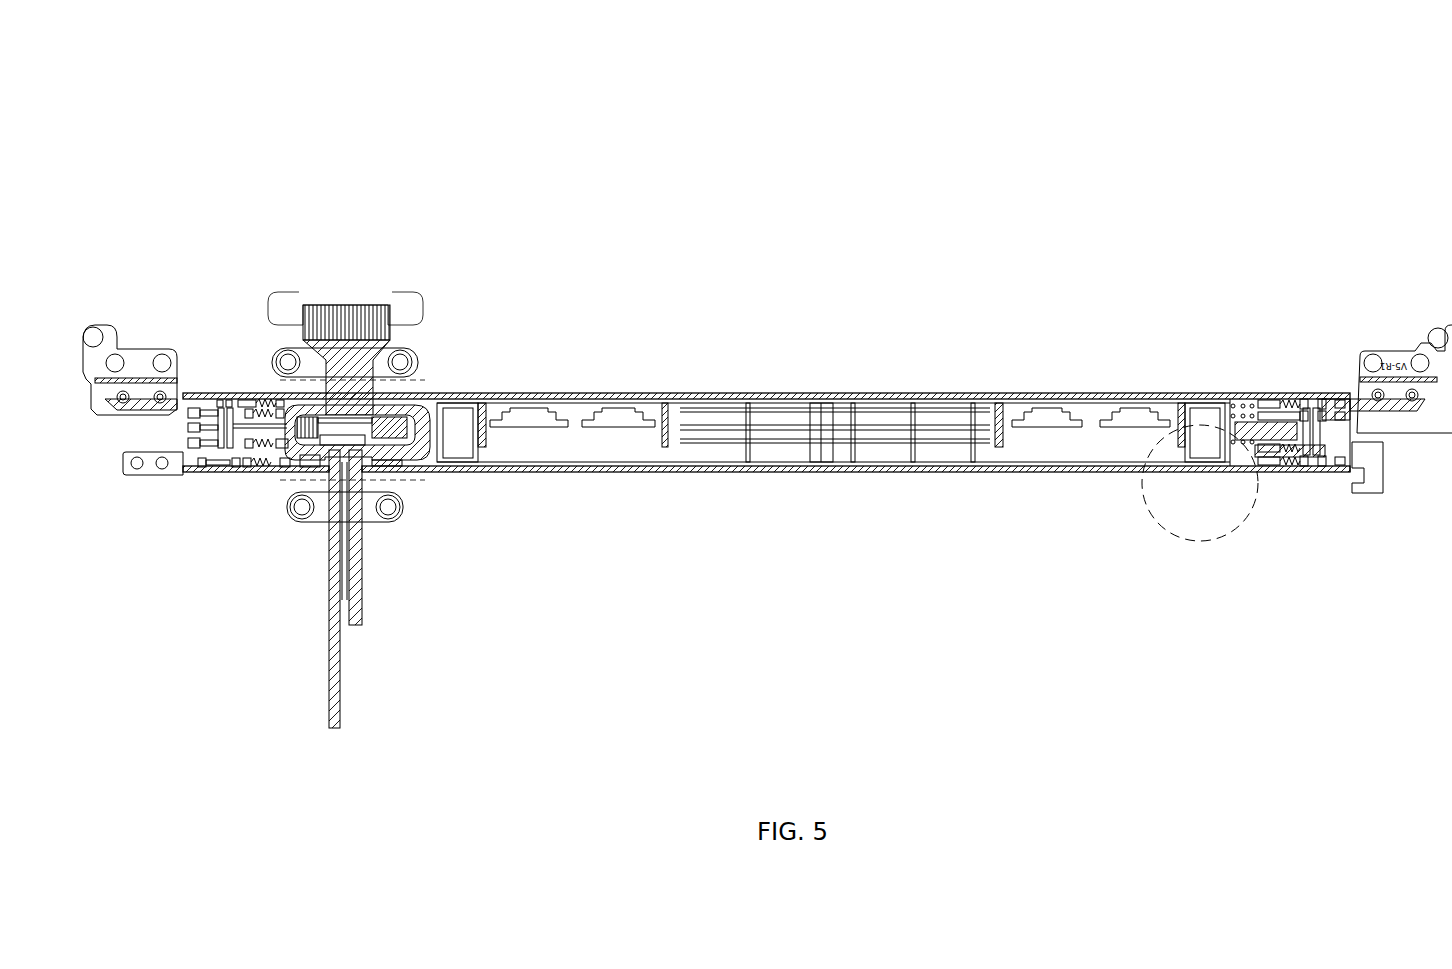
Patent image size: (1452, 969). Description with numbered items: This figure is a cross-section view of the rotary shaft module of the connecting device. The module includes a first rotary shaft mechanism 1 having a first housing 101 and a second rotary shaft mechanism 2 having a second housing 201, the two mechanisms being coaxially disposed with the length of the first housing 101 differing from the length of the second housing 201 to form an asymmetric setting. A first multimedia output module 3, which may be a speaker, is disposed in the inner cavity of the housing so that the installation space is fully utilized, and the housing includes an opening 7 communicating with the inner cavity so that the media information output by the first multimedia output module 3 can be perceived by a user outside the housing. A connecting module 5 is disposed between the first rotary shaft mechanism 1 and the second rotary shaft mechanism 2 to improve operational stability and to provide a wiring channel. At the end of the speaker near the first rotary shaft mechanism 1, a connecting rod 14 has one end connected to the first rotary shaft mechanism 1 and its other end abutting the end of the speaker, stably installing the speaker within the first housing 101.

The first rotary shaft mechanism 1 is at (1262, 449).
The second rotary shaft mechanism 2 is at (223, 424).
The first multimedia output module 3 is at (718, 463).
The connecting module 5 is at (420, 373).
The opening 7 is at (365, 568).
The connecting rod 14 is at (1250, 428).
The first housing 101 is at (957, 393).
The second housing 201 is at (243, 393).